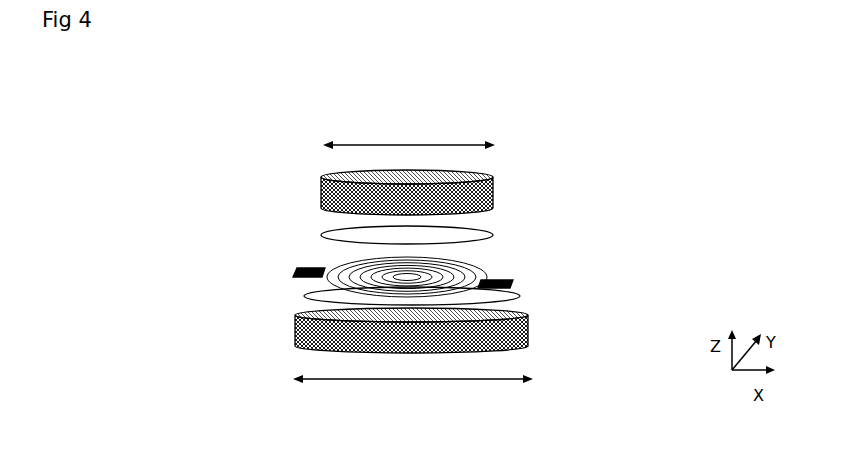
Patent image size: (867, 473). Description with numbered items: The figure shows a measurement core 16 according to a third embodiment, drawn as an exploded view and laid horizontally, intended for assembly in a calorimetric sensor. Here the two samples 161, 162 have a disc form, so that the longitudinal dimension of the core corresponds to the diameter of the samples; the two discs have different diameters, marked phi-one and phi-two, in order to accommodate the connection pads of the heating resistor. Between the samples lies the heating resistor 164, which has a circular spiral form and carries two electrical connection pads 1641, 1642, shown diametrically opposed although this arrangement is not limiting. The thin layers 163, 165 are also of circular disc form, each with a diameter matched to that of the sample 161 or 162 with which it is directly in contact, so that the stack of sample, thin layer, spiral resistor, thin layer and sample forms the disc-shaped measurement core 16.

The measurement core 16 is at (549, 147).
The sample 161 is at (295, 333).
The sample 162 is at (321, 190).
The thin layer 163 is at (305, 297).
The heating resistor 164 is at (485, 272).
The electrical connection pad 1641 is at (296, 272).
The electrical connection pad 1642 is at (515, 285).
The thin layer 165 is at (321, 235).